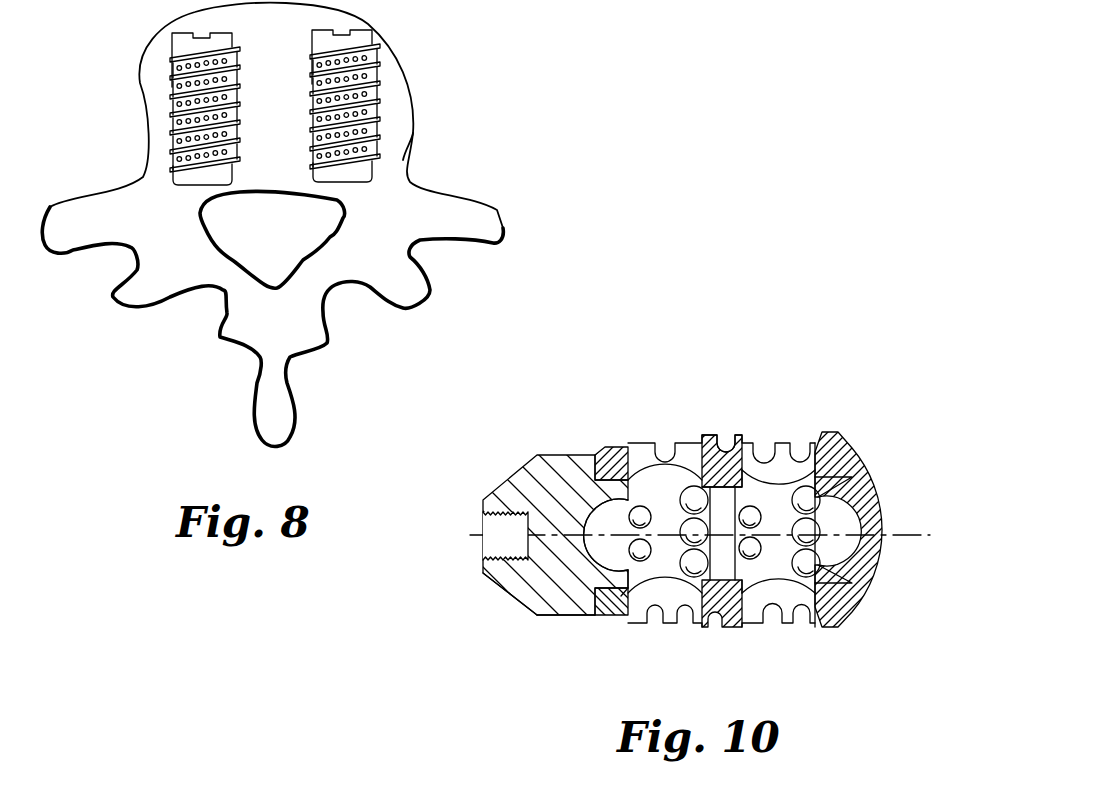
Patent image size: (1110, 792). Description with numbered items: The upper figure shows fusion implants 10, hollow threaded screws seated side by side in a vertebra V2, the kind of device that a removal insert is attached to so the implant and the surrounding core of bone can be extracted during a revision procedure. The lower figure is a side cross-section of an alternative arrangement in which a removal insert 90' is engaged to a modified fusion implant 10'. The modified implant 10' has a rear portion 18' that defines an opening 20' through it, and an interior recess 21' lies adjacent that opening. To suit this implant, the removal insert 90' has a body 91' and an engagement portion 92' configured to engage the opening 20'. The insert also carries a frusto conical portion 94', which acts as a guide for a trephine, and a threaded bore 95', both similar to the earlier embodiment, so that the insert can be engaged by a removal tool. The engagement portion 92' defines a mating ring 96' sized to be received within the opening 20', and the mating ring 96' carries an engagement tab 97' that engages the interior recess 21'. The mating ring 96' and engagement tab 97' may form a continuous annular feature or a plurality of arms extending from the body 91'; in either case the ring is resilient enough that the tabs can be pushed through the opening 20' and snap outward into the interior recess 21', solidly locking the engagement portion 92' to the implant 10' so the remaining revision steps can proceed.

In FIG. 8, the fusion implant 10 is at (155, 109).
In FIG. 8, the vertebra V2 is at (394, 94).
In FIG. 10, the modified fusion implant 10' is at (755, 505).
In FIG. 10, the rear portion 18' is at (588, 436).
In FIG. 10, the opening 20' is at (699, 512).
In FIG. 10, the interior recess 21' is at (721, 620).
In FIG. 10, the removal insert 90' is at (537, 534).
In FIG. 10, the body 91' is at (551, 646).
In FIG. 10, the engagement portion 92' is at (599, 630).
In FIG. 10, the frusto conical portion 94' is at (492, 620).
In FIG. 10, the threaded bore 95' is at (470, 517).
In FIG. 10, the mating ring 96' is at (641, 629).
In FIG. 10, the engagement tab 97' is at (621, 475).